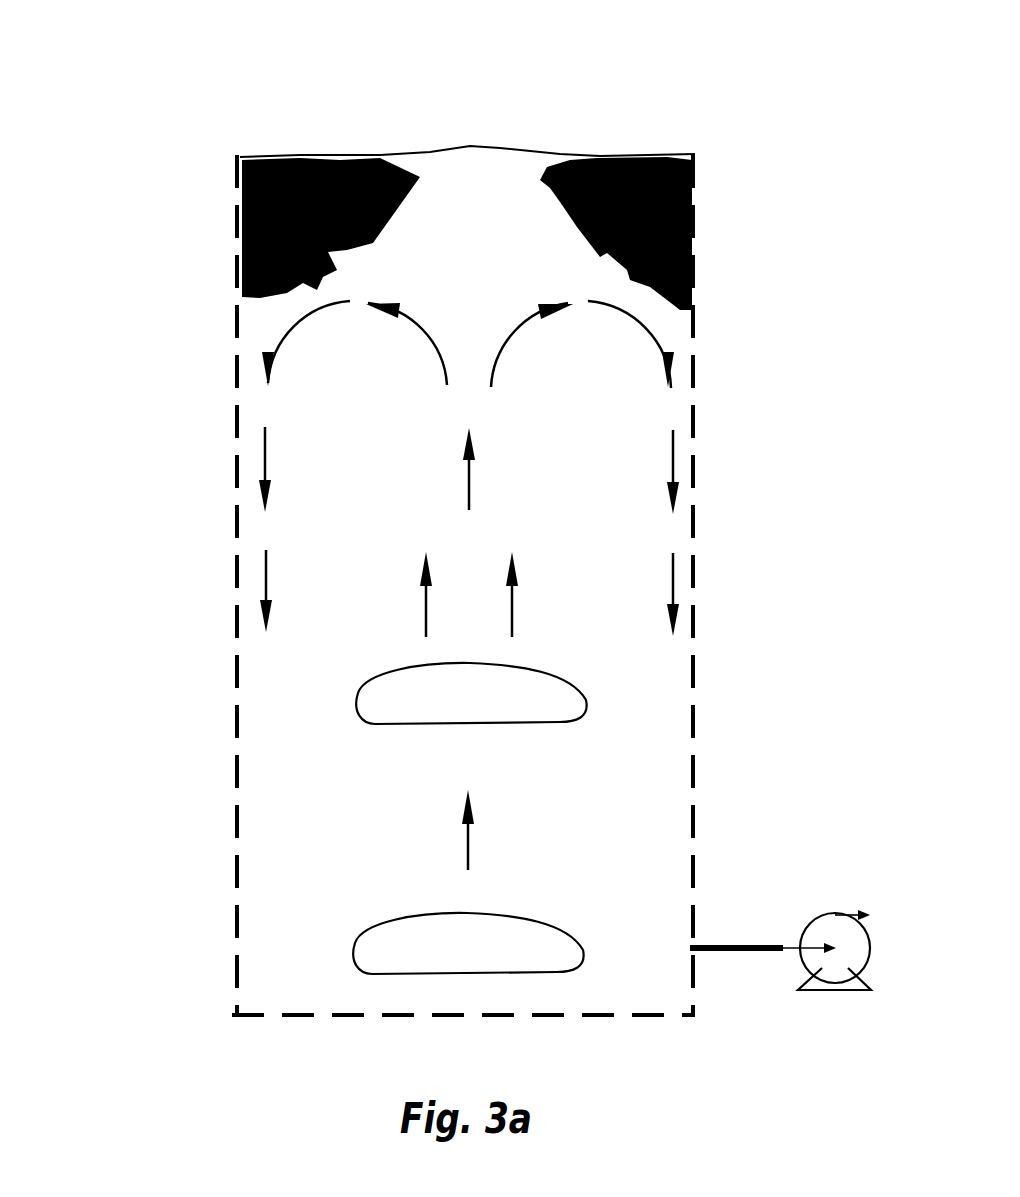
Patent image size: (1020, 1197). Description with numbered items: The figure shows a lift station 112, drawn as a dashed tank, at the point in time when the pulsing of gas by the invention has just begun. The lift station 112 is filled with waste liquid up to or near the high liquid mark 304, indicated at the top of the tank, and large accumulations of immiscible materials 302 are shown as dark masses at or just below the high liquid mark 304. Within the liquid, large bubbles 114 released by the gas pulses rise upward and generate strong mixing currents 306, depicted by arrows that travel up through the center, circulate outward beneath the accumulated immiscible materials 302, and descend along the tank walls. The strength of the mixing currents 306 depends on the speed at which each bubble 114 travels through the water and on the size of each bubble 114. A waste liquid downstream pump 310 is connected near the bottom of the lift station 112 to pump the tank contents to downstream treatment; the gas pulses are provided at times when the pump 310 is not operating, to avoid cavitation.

The lift station 112 is at (235, 515).
The large bubbles 114 is at (352, 715).
The immiscible materials 302 is at (337, 157).
The high liquid mark 304 is at (706, 153).
The mixing currents 306 is at (665, 349).
The waste liquid downstream pump 310 is at (833, 913).